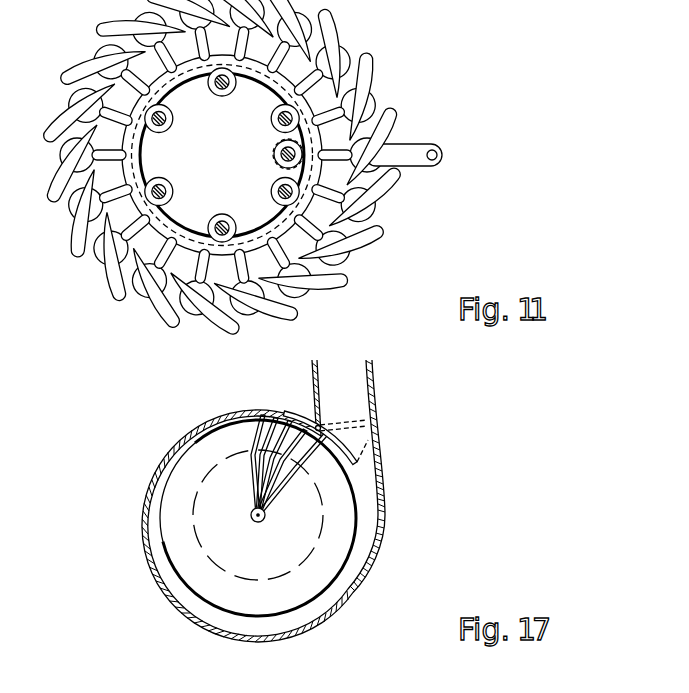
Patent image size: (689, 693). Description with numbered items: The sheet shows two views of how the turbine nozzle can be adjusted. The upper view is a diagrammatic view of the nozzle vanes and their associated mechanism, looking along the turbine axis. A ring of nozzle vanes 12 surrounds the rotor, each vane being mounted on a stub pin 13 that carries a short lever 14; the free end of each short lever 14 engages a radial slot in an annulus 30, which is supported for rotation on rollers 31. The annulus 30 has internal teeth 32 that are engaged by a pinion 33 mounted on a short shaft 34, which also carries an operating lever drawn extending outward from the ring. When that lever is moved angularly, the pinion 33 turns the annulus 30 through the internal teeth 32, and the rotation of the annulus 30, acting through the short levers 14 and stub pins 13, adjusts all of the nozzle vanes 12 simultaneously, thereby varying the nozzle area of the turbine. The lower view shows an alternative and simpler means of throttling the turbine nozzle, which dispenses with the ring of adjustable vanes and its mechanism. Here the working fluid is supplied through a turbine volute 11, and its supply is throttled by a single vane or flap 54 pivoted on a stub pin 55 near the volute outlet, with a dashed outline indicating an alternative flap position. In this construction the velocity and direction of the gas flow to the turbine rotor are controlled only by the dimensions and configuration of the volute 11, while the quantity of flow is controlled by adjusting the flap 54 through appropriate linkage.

In FIG. 17, the turbine volute 11 is at (367, 513).
In FIG. 11, the nozzle vanes 12 is at (325, 23).
In FIG. 11, the stub pins 13 is at (373, 93).
In FIG. 11, the short levers 14 is at (275, 65).
In FIG. 11, the annulus 30 is at (177, 111).
In FIG. 11, the rollers 31 is at (165, 130).
In FIG. 11, the internal teeth 32 is at (278, 168).
In FIG. 11, the pinion 33 is at (273, 150).
In FIG. 11, the short shaft 34 is at (315, 148).
In FIG. 17, the flap 54 is at (350, 446).
In FIG. 17, the stub pin 55 is at (318, 428).